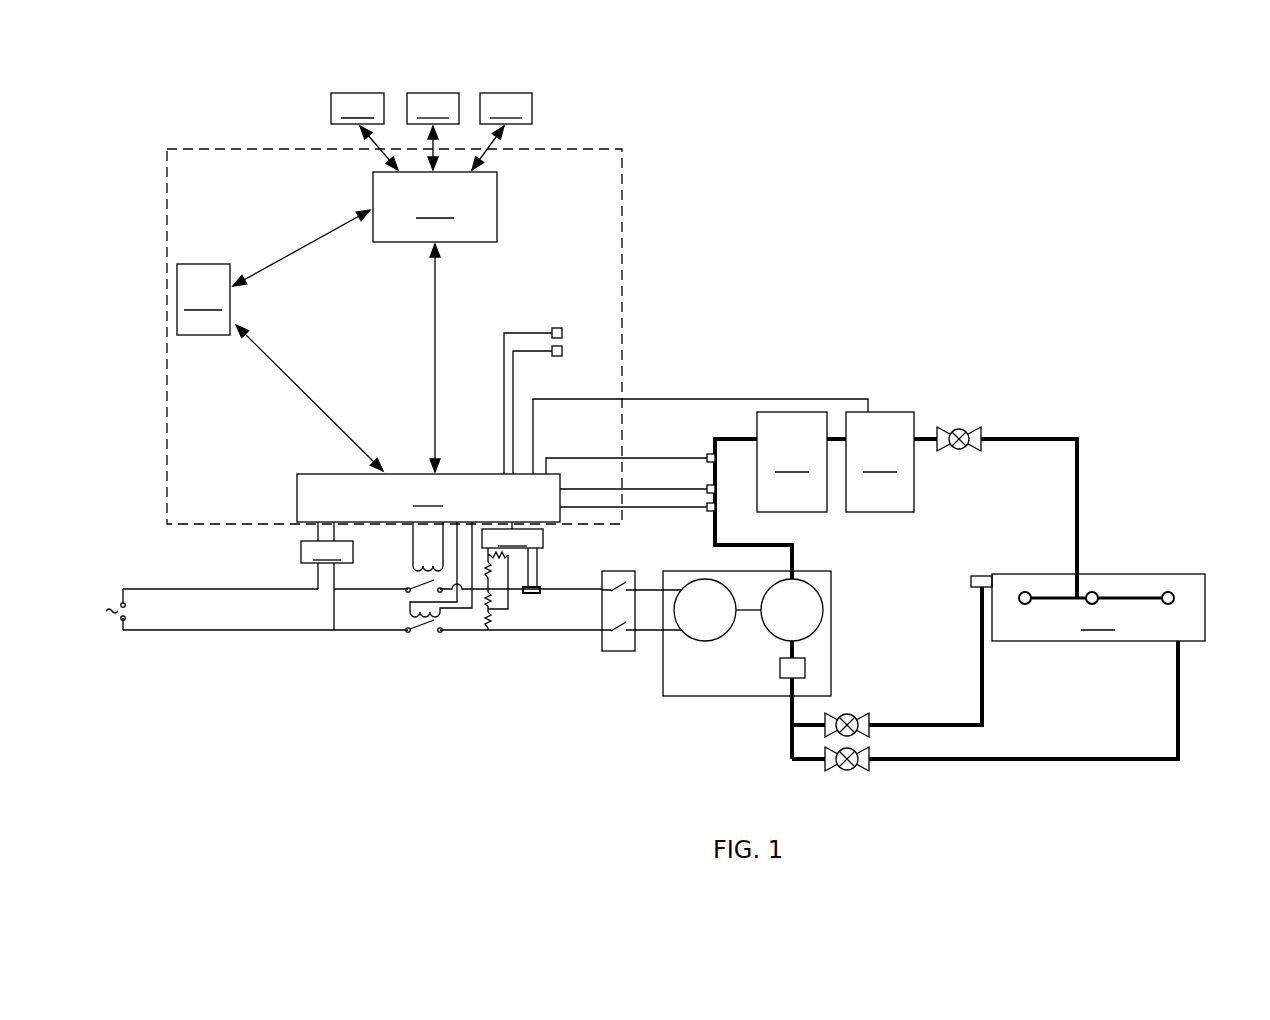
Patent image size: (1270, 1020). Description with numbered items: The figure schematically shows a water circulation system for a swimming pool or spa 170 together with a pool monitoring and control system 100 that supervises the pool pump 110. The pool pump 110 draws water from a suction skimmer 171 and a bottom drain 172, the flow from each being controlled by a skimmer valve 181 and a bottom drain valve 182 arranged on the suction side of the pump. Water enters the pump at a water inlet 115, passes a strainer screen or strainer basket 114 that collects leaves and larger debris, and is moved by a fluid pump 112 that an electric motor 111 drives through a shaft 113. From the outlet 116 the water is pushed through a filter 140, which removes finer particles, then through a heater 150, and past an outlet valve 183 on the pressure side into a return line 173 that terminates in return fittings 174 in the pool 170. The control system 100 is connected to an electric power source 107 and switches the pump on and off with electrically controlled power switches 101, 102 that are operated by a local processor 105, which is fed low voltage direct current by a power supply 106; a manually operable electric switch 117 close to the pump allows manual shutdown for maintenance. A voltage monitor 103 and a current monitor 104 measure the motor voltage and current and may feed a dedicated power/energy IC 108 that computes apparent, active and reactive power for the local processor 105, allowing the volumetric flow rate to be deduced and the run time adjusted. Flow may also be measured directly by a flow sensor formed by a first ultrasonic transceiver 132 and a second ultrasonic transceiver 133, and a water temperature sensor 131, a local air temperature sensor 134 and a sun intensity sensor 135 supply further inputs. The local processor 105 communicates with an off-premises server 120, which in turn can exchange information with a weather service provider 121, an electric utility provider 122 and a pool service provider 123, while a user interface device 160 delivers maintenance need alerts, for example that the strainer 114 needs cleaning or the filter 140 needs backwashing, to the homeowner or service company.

The pool monitoring and control system 100 is at (166, 440).
The electrically controlled power switch 101 is at (409, 582).
The electrically controlled power switch 102 is at (409, 621).
The voltage monitor 103 is at (501, 567).
The current monitor 104 is at (533, 594).
The local processor 105 is at (582, 514).
The power supply 106 is at (327, 552).
The electric power source 107 is at (114, 599).
The power/energy IC 108 is at (512, 538).
The pool pump 110 is at (672, 697).
The electric motor 111 is at (683, 587).
The fluid pump 112 is at (823, 600).
The shaft 113 is at (748, 612).
The strainer screen or strainer basket 114 is at (805, 667).
The water inlet 115 is at (790, 692).
The outlet 116 is at (797, 548).
The manually operable electric switch 117 is at (625, 651).
The server 120 is at (435, 322).
The weather service provider 121 is at (364, 131).
The electric utility provider 122 is at (433, 131).
The pool service provider 123 is at (502, 131).
The water temperature sensor 131 is at (706, 509).
The first ultrasonic transceiver 132 is at (706, 488).
The second ultrasonic transceiver 133 is at (706, 456).
The local air temperature sensor 134 is at (562, 334).
The sun intensity sensor 135 is at (562, 351).
The filter 140 is at (801, 462).
The heater 150 is at (891, 462).
The user interface device 160 is at (280, 340).
The swimming pool or spa 170 is at (1098, 607).
The suction skimmer 171 is at (983, 576).
The bottom drain 172 is at (1180, 643).
The return line 173 is at (1073, 550).
The return fittings 174 is at (1168, 591).
The skimmer valve 181 is at (870, 716).
The bottom drain valve 182 is at (858, 765).
The outlet valve 183 is at (982, 432).